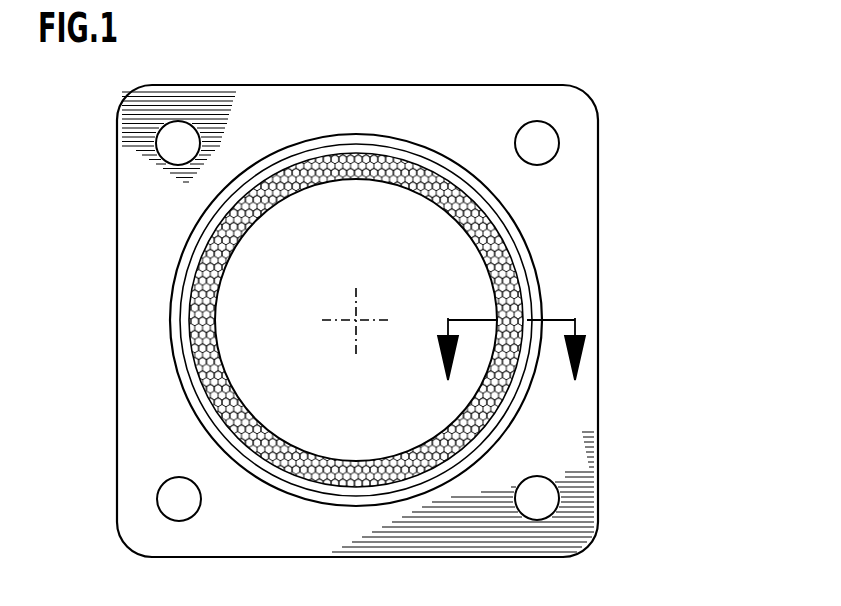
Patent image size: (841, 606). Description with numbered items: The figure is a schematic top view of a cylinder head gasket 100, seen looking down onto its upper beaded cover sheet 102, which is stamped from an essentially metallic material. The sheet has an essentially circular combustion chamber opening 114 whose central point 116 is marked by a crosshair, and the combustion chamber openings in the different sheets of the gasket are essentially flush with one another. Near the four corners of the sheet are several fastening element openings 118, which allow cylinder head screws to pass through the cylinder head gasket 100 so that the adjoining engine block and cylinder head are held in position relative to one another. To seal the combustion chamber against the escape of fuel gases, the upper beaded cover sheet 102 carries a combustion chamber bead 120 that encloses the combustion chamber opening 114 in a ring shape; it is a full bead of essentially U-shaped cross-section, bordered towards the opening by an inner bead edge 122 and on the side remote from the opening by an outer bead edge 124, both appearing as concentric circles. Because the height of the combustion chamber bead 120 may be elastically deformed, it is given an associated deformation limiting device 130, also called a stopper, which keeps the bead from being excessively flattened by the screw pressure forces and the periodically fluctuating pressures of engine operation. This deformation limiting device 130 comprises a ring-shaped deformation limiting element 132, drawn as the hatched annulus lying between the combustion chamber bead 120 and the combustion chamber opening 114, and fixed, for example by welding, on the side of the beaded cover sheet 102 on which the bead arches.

The cylinder head gasket 100 is at (370, 288).
The upper beaded cover sheet 102 is at (147, 311).
The combustion chamber opening 114 is at (329, 276).
The central point 116 is at (356, 322).
The fastening element openings 118 is at (160, 130).
The combustion chamber bead 120 is at (418, 262).
The inner bead edge 122 is at (292, 157).
The outer bead edge 124 is at (357, 138).
The deformation limiting device 130 is at (428, 253).
The ring-shaped deformation limiting element 132 is at (434, 175).